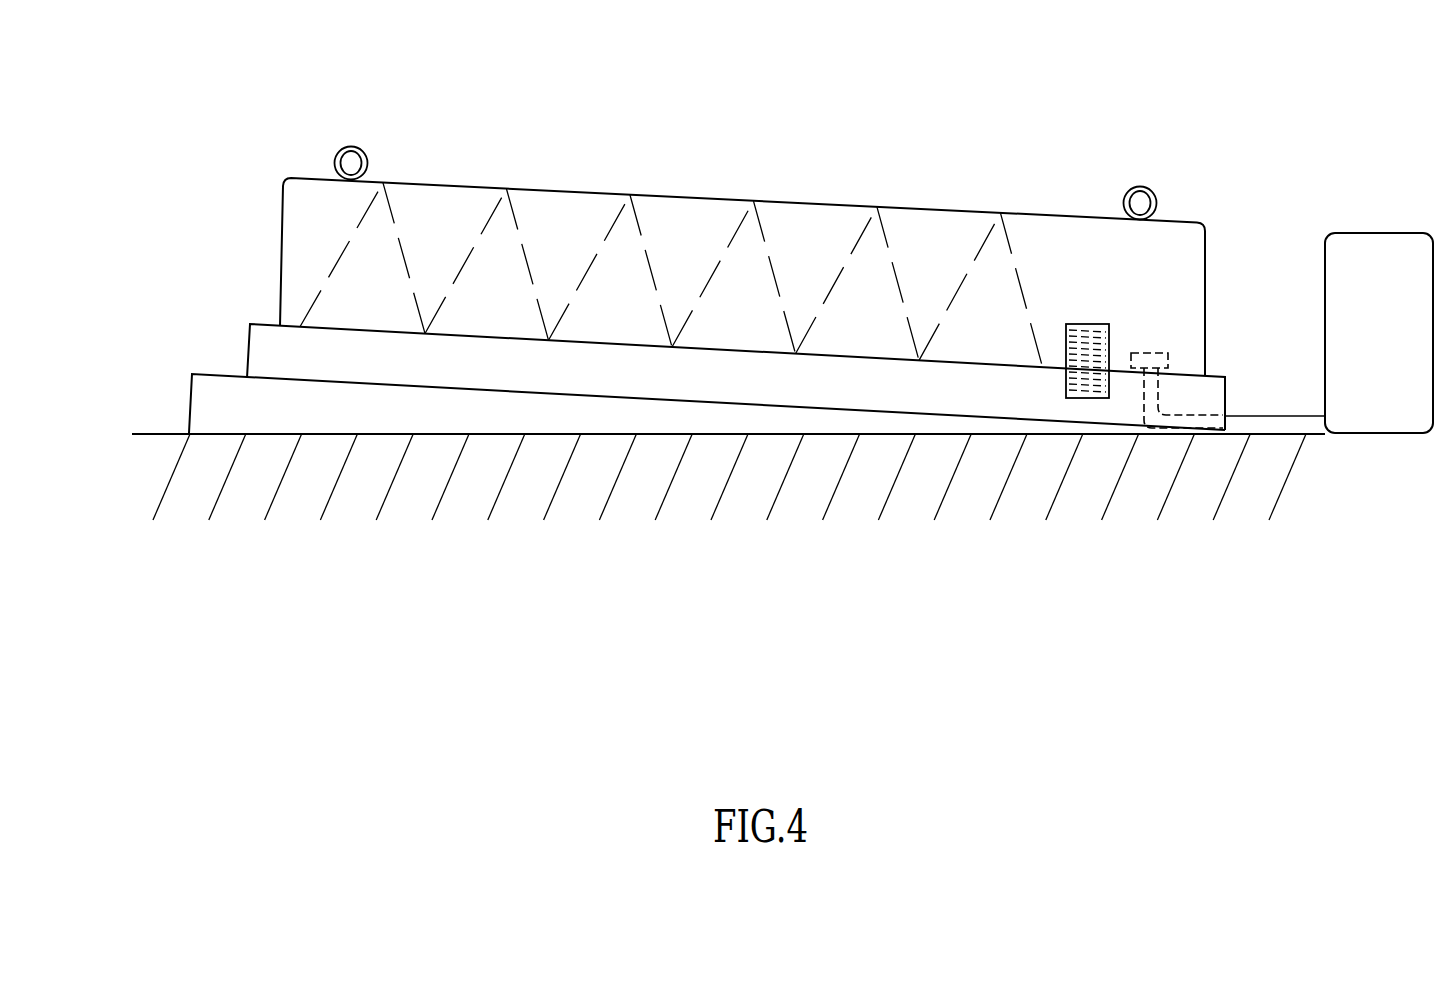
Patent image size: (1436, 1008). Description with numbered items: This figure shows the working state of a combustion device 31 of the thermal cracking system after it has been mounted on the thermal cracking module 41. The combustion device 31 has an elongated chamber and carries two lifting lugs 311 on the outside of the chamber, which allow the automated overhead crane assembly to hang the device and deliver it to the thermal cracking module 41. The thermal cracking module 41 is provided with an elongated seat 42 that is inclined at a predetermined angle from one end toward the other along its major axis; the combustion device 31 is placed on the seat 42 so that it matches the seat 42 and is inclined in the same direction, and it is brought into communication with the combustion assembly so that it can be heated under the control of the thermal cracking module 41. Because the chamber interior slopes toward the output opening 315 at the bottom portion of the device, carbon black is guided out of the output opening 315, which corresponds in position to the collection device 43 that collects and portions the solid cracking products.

The combustion device 31 is at (697, 198).
The lifting lug 311 is at (360, 142).
The output opening 315 is at (1151, 352).
The thermal cracking module 41 is at (248, 350).
The seat 42 is at (190, 393).
The collection device 43 is at (1378, 232).